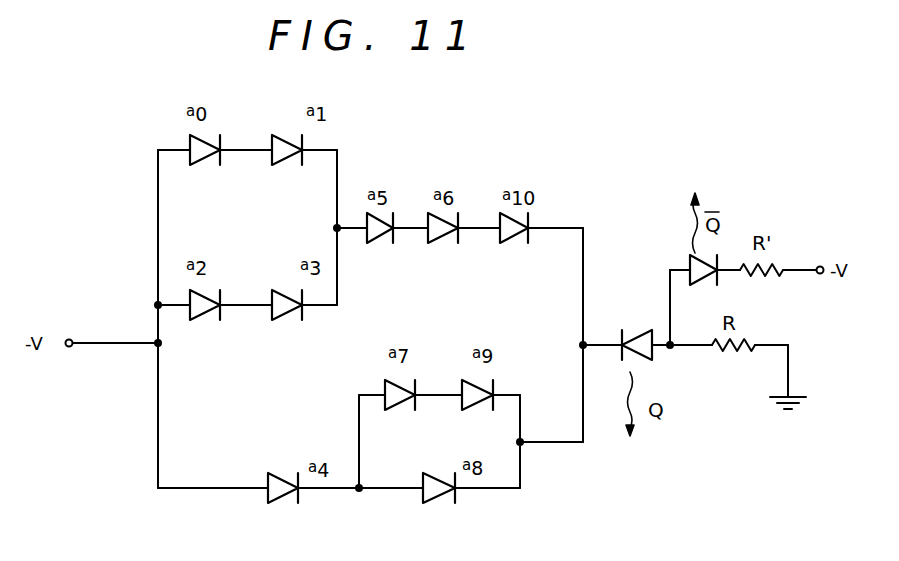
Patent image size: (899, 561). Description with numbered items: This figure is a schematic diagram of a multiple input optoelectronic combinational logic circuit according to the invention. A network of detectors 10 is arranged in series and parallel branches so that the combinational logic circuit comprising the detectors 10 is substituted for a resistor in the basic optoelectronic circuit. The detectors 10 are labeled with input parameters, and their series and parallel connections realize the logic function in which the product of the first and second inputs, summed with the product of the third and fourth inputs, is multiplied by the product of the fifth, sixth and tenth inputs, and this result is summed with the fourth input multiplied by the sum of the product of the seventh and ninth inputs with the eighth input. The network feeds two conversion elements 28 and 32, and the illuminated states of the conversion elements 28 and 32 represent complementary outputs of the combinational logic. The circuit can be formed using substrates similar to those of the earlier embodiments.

The detector 10 is at (275, 166).
The conversion element 28 is at (646, 329).
The conversion element 32 is at (691, 261).